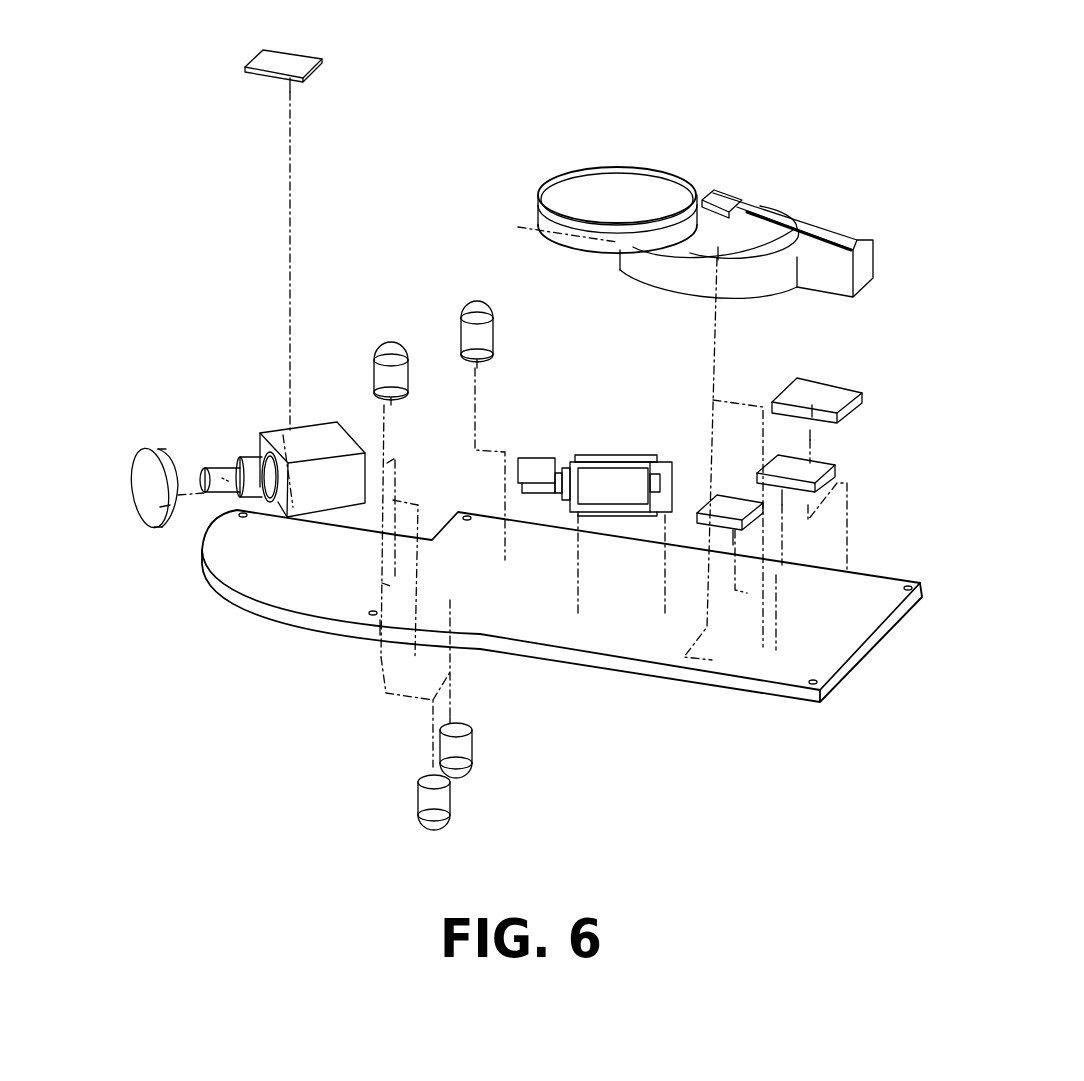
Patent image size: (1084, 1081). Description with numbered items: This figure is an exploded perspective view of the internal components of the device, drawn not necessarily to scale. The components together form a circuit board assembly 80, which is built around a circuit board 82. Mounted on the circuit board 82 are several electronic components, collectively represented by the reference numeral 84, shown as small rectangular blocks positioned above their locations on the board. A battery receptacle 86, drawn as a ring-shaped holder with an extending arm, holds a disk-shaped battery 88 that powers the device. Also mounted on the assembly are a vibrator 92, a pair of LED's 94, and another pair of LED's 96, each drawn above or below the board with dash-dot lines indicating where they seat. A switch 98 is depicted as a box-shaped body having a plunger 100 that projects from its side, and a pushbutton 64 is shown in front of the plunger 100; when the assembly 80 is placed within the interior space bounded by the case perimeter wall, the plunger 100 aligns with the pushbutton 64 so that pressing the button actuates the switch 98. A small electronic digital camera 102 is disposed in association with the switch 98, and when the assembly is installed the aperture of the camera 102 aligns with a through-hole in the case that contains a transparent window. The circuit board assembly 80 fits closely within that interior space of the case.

The pushbutton 64 is at (137, 490).
The circuit board assembly 80 is at (262, 697).
The circuit board 82 is at (815, 702).
The electronic components 84 is at (717, 493).
The battery receptacle 86 is at (810, 212).
The battery 88 is at (648, 172).
The vibrator 92 is at (623, 453).
The pair of LED's 94 is at (468, 312).
The pair of LED's 96 is at (453, 822).
The switch 98 is at (311, 425).
The plunger 100 is at (218, 466).
The electronic digital camera 102 is at (285, 58).